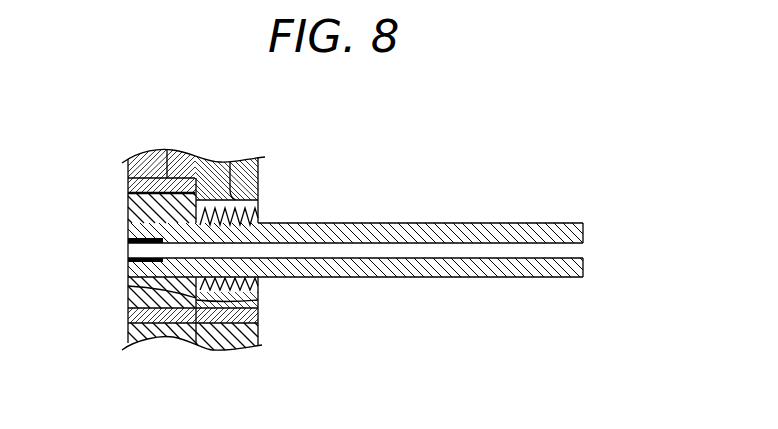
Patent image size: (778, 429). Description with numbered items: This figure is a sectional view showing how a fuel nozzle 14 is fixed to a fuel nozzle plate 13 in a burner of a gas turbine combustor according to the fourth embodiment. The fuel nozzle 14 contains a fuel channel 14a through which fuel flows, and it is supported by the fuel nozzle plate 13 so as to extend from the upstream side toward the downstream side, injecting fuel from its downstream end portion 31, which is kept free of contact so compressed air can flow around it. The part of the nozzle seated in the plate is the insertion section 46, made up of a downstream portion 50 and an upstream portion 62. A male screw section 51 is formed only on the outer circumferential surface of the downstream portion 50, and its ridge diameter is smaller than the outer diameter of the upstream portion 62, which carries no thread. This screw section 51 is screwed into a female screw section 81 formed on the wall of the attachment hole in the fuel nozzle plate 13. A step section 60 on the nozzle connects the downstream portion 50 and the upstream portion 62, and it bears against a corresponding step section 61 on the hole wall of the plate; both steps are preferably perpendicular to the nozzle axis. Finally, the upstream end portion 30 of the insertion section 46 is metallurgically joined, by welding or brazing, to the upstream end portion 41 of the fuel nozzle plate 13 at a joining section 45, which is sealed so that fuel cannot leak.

The fuel nozzle plate 13 is at (243, 338).
The fuel nozzle 14 is at (388, 215).
The fuel channel 14a is at (572, 252).
The upstream end portion 30 is at (127, 218).
The downstream end portion 31 is at (585, 232).
The upstream end portion 41 is at (127, 177).
The joining section 45 is at (127, 192).
The insertion section 46 is at (197, 345).
The downstream portion 50 is at (225, 162).
The screw section 51 is at (264, 224).
The step section 60 is at (129, 290).
The step section 61 is at (263, 312).
The upstream portion 62 is at (163, 152).
The screw section 81 is at (260, 295).